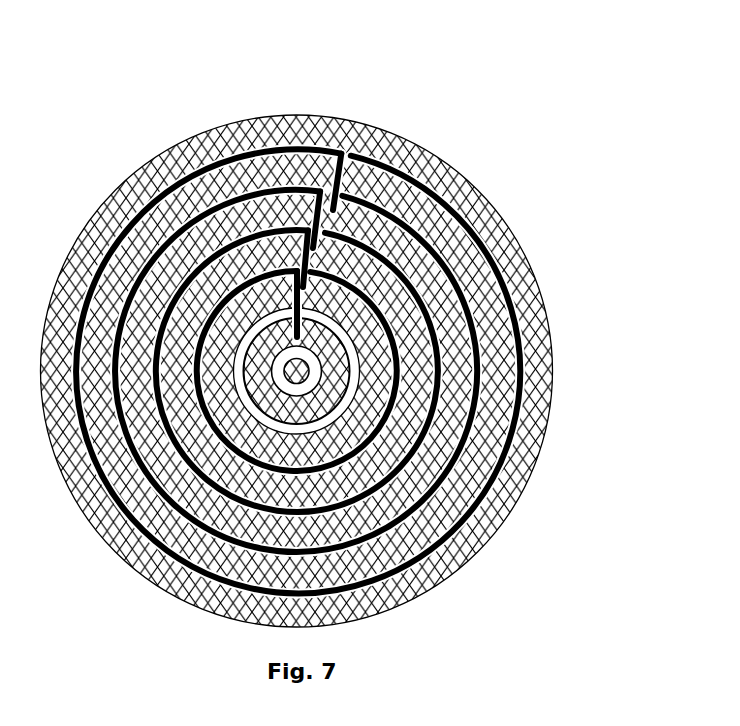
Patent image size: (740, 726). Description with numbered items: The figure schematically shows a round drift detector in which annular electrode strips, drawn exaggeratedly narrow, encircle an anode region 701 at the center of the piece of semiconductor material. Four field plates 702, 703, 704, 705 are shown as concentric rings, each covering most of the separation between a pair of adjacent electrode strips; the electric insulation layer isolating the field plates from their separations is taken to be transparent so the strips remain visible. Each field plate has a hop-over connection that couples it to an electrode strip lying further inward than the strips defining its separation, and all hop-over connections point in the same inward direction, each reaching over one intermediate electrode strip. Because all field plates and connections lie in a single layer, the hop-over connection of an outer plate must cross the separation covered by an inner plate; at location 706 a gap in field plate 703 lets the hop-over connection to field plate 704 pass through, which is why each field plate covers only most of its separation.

The anode region 701 is at (318, 350).
The field plate 702 is at (393, 398).
The field plate 703 is at (437, 387).
The field plate 704 is at (478, 365).
The field plate 705 is at (517, 332).
The location 706 is at (328, 215).